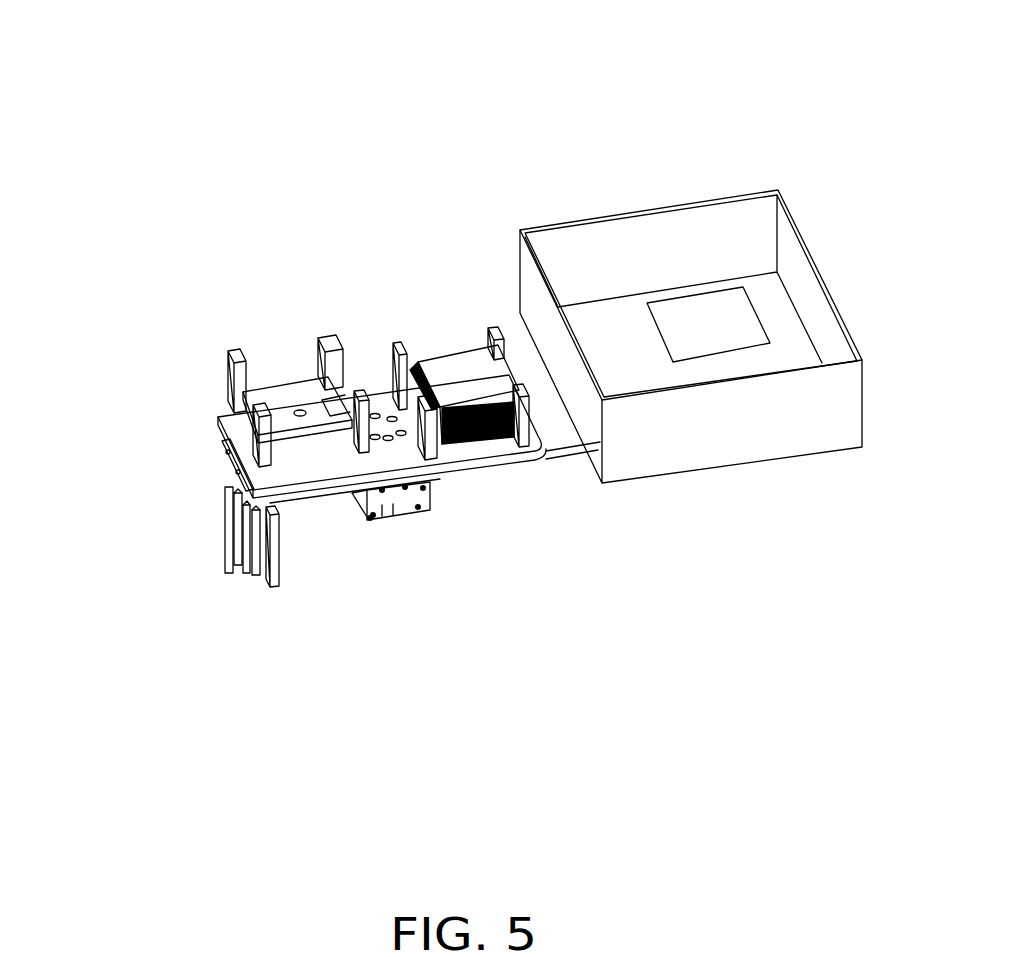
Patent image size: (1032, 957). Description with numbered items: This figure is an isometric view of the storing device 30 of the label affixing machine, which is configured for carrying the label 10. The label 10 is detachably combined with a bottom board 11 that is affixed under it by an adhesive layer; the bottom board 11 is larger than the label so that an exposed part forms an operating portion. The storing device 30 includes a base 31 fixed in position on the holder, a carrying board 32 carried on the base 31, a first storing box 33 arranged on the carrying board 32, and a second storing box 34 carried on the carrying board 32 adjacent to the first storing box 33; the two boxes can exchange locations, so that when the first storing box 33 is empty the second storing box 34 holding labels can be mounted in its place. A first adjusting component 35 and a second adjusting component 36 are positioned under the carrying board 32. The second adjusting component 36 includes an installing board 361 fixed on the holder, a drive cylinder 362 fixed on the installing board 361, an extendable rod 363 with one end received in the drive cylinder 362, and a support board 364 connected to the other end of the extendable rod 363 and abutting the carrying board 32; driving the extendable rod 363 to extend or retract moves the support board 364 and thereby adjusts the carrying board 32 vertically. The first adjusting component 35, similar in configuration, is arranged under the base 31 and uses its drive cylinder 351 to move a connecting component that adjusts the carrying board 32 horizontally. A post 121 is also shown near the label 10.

The storing device 30 is at (402, 44).
The label 10 is at (483, 365).
The bottom board 11 is at (710, 303).
The positioning post 121 is at (415, 373).
The base 31 is at (557, 457).
The carrying board 32 is at (475, 467).
The first storing box 33 is at (433, 447).
The second storing box 34 is at (305, 392).
The first adjusting component 35 is at (382, 507).
The drive cylinder 351 is at (393, 510).
The second adjusting component 36 is at (132, 447).
The installing board 361 is at (275, 553).
The drive cylinder 362 is at (227, 547).
The extendable rod 363 is at (225, 508).
The support board 364 is at (227, 470).